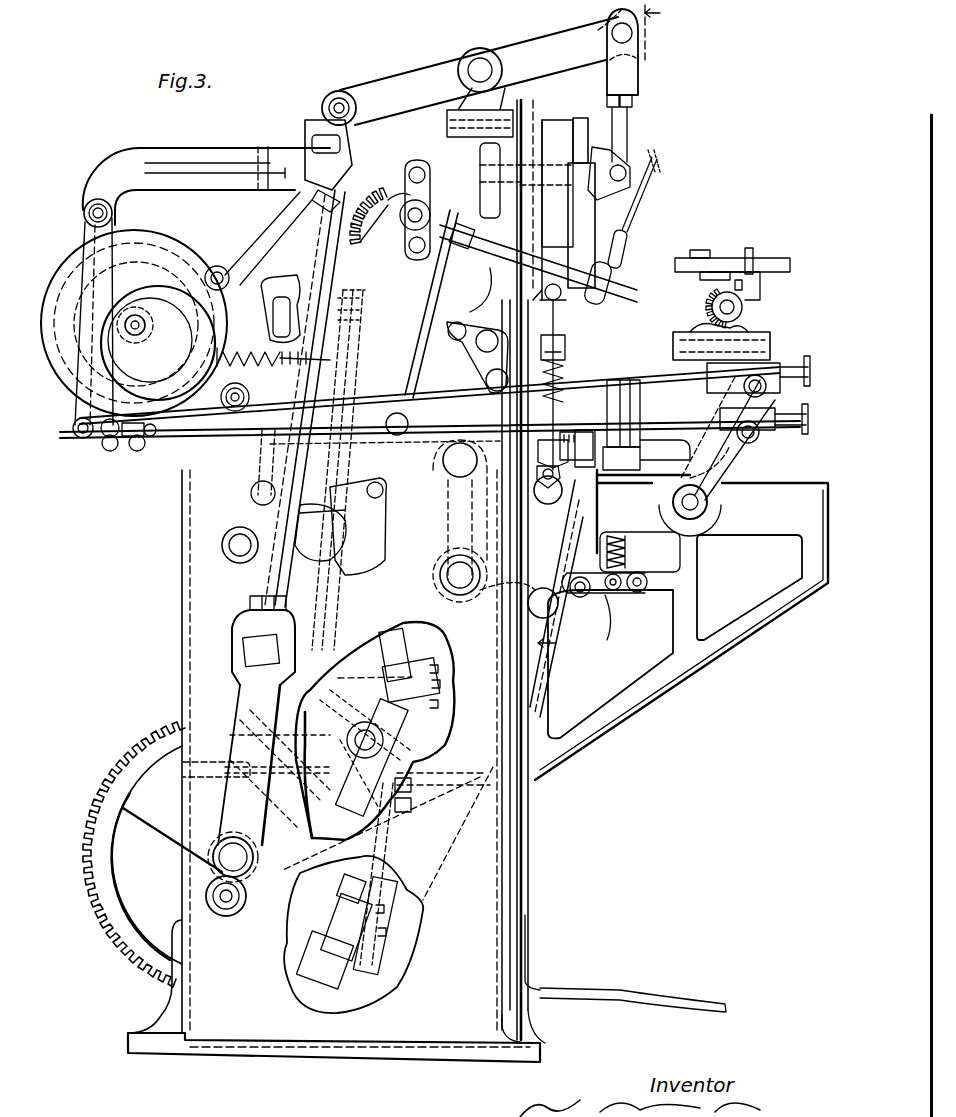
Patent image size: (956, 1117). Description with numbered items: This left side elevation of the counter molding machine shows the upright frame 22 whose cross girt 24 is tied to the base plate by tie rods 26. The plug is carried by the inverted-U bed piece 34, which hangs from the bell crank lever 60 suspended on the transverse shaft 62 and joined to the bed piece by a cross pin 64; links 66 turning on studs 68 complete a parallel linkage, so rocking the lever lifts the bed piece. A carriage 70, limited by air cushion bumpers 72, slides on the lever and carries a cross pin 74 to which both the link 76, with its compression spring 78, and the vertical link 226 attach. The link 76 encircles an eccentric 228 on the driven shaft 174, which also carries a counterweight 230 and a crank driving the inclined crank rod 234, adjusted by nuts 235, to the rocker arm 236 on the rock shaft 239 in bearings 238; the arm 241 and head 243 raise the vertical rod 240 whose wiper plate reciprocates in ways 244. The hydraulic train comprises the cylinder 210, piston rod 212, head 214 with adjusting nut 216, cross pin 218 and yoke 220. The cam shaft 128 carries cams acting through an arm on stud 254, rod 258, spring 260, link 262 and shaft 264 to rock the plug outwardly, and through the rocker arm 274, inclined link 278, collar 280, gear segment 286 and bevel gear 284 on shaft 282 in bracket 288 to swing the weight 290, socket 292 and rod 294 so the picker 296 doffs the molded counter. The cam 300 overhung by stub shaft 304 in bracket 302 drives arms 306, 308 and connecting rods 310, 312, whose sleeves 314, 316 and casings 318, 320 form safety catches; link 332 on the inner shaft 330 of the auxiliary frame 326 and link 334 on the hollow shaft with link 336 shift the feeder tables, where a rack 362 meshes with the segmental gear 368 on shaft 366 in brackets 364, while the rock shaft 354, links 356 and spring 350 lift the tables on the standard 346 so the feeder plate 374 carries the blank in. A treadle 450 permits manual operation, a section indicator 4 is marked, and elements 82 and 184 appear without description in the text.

The section line 4 is at (608, 338).
The frame 22 is at (252, 1022).
The cross girt 24 is at (560, 130).
The tie rods 26 is at (520, 860).
The bed piece 34 is at (540, 524).
The bell crank lever 60 is at (395, 970).
The transverse shaft 62 is at (460, 510).
The cross pin 64 is at (535, 497).
The links 66 is at (505, 602).
The studs 68 is at (458, 582).
The carriage 70 is at (405, 738).
The air cushion bumpers 72 is at (405, 680).
The cross pin 74 is at (305, 712).
The link 76 is at (360, 805).
The compression spring 78 is at (330, 830).
The bolt 82 is at (562, 490).
The cam shaft 128 is at (139, 313).
The driven shaft 174 is at (207, 888).
The gear 184 is at (92, 902).
The cylinder 210 is at (375, 312).
The piston rod 212 is at (345, 470).
The head 214 is at (320, 550).
The adjusting nut 216 is at (258, 500).
The cross pin 218 is at (270, 520).
The yoke 220 is at (215, 540).
The vertical link 226 is at (345, 540).
The eccentric 228 is at (212, 860).
The counterweight 230 is at (130, 800).
The crank rod 234 is at (240, 700).
The nuts 235 is at (340, 200).
The rocker arm 236 is at (396, 75).
The bearings 238 is at (505, 95).
The rock shaft 239 is at (482, 58).
The vertical rod 240 is at (630, 120).
The forwardly extending arm 241 is at (580, 28).
The head 243 is at (638, 75).
The ways 244 is at (640, 195).
The stud 254 is at (220, 266).
The rod 258 is at (395, 330).
The compression spring 260 is at (258, 348).
The link 262 is at (485, 365).
The shaft 264 is at (490, 382).
The rocker arm 274 is at (213, 400).
The inclined link 278 is at (435, 290).
The collar 280 is at (480, 238).
The shaft 282 is at (474, 290).
The bevel gear 284 is at (365, 235).
The gear segment 286 is at (418, 160).
The bracket 288 is at (450, 215).
The weight 290 is at (565, 318).
The socket 292 is at (630, 258).
The rod 294 is at (637, 222).
The picker 296 is at (659, 155).
The cam 300 is at (70, 262).
The bracket 302 is at (190, 143).
The stub shaft 304 is at (112, 212).
The arm 306 is at (76, 410).
The arm 308 is at (128, 457).
The connecting rod 310 is at (185, 455).
The connecting rod 312 is at (160, 440).
The sleeve 314 is at (800, 360).
The sleeve 316 is at (790, 430).
The casing 318 is at (770, 395).
The casing 320 is at (762, 440).
The auxiliary frame 326 is at (690, 662).
The inner shaft 330 is at (694, 515).
The link 332 is at (745, 478).
The link 334 is at (715, 455).
The link 336 is at (702, 400).
The standard 346 is at (640, 455).
The spring 350 is at (643, 549).
The rock shaft 354 is at (645, 585).
The links 356 is at (624, 620).
The rack 362 is at (683, 333).
The brackets 364 is at (758, 335).
The horizontal shaft 366 is at (748, 305).
The segmental gear 368 is at (712, 310).
The feeder plate 374 is at (805, 262).
The treadle 450 is at (700, 998).